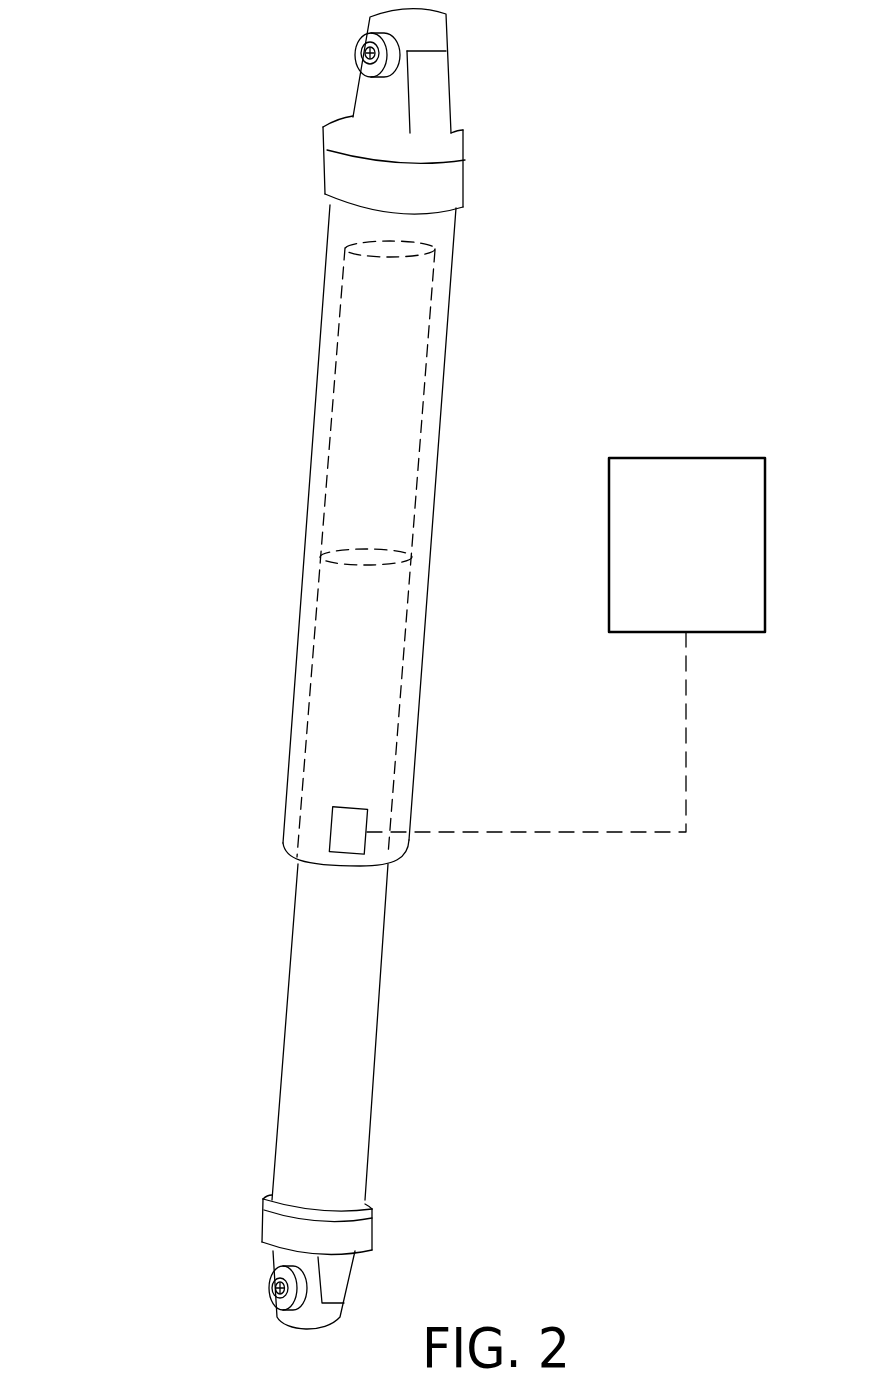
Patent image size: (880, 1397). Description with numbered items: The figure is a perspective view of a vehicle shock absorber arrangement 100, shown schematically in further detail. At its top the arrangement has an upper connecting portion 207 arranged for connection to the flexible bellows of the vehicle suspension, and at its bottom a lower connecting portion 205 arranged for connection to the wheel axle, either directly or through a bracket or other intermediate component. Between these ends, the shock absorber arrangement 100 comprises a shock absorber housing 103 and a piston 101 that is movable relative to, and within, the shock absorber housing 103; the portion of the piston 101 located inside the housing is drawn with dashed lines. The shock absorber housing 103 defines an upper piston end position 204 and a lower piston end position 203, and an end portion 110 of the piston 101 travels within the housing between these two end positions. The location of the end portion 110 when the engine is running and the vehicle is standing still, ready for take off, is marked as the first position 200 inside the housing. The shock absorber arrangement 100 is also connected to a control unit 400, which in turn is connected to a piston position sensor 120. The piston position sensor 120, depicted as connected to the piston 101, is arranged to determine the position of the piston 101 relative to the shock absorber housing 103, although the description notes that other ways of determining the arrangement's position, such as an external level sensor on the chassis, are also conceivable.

The vehicle shock absorber arrangement 100 is at (138, 320).
The piston 101 is at (323, 1060).
The shock absorber housing 103 is at (315, 350).
The end portion of the piston 110 is at (370, 554).
The piston position sensor 120 is at (330, 817).
The first position 200 is at (323, 553).
The lower piston end position 203 is at (282, 830).
The upper piston end position 204 is at (343, 249).
The lower connecting portion 205 is at (273, 1288).
The upper connecting portion 207 is at (360, 53).
The control unit 400 is at (687, 458).